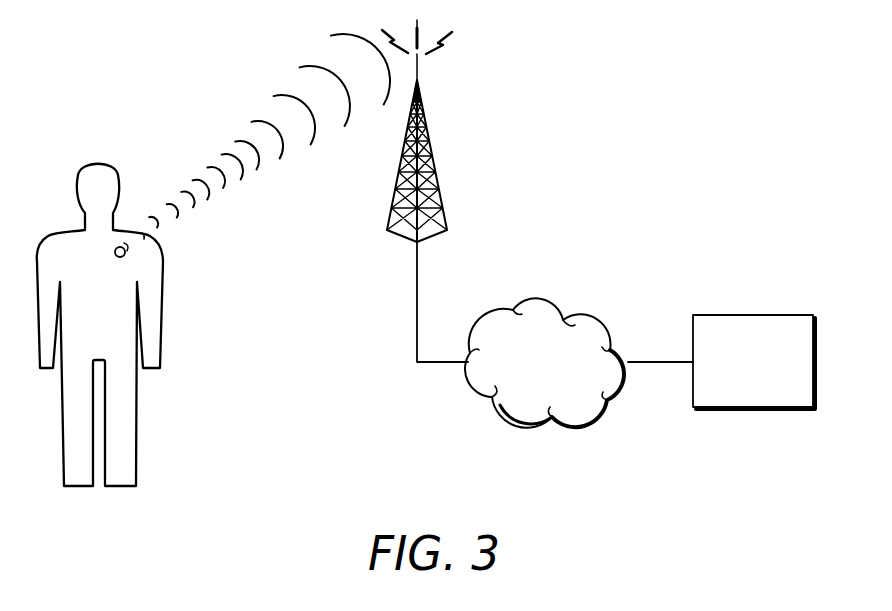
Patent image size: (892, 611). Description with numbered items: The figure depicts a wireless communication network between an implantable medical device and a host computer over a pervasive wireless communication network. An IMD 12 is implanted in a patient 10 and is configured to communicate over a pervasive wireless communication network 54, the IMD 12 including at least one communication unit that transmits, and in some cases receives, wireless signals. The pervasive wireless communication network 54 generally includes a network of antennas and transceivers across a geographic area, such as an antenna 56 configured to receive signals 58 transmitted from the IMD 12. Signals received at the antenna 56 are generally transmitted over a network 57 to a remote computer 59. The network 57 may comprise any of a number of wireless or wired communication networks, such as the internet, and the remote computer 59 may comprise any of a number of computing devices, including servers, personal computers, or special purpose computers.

The patient 10 is at (136, 398).
The IMD 12 is at (120, 257).
The pervasive wireless communication network 54 is at (410, 381).
The antenna 56 is at (423, 110).
The network 57 is at (587, 303).
The signals 58 is at (250, 142).
The remote computer 59 is at (795, 315).